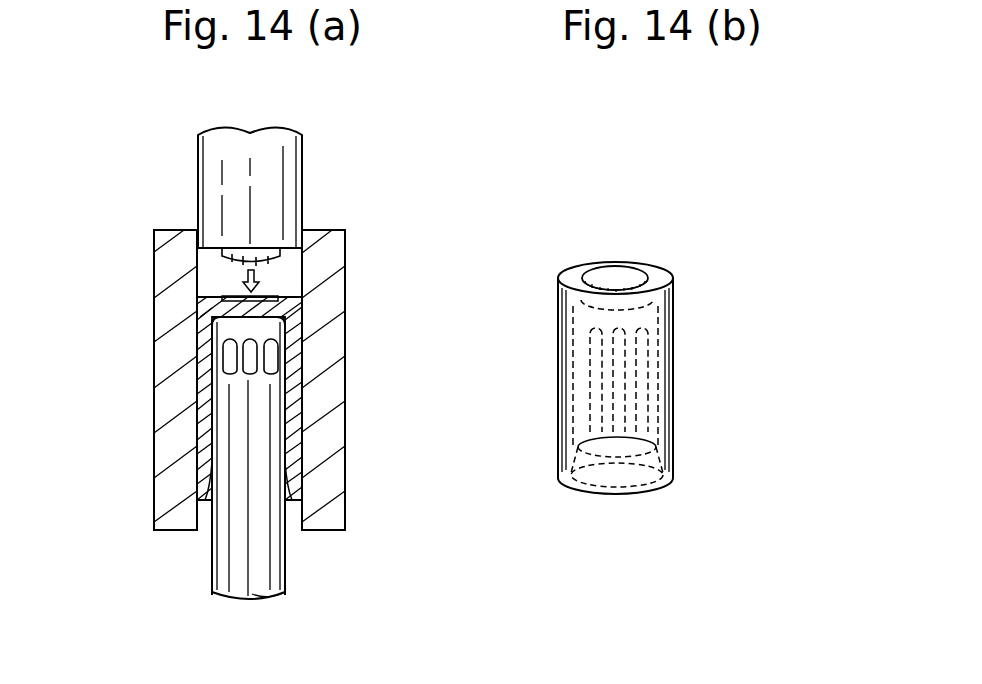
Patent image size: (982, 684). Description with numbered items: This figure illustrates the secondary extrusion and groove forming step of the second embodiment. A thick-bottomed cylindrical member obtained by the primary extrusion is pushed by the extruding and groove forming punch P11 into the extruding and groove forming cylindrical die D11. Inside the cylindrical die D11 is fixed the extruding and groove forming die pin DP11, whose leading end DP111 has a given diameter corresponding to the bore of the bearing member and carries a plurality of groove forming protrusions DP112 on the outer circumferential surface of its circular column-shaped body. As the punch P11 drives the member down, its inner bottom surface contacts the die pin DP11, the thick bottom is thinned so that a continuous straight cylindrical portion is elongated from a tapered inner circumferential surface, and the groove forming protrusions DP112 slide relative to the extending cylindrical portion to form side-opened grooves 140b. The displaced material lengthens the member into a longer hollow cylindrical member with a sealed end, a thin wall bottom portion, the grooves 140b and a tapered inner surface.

The extruding and groove forming punch P11 is at (322, 189).
The extruding and groove forming cylindrical die D11 is at (445, 389).
The extruding and groove forming die pin DP11 is at (314, 571).
The leading end DP111 is at (272, 333).
The groove forming protrusions DP112 is at (228, 350).
The grooves 140b is at (648, 393).